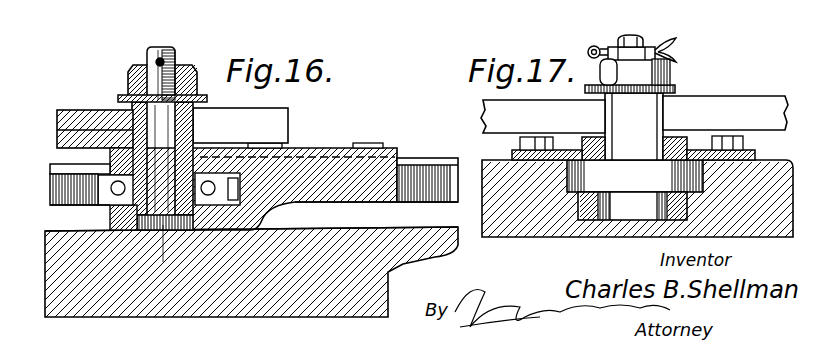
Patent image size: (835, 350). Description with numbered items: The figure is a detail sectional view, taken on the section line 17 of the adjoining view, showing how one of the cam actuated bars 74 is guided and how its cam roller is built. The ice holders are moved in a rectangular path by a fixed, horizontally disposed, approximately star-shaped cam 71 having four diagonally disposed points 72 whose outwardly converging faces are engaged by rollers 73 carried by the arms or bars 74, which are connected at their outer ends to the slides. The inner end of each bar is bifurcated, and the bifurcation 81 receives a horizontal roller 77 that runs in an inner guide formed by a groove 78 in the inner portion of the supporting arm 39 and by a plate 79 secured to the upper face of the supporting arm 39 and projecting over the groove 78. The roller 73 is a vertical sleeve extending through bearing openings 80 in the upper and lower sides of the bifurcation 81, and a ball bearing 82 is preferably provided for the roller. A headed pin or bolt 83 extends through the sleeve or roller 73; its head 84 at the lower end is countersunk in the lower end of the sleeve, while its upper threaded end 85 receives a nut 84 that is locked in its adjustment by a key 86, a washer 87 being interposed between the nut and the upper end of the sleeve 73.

In FIG. 16, the section line 17— 17 is at (143, 32).
In FIG. 17, the section line 17— 17 is at (616, 54).
In FIG. 16, the supporting arm 39 is at (323, 297).
In FIG. 17, the supporting arm 39 is at (511, 238).
In FIG. 16, the star-shaped cam 71 is at (68, 110).
In FIG. 17, the star-shaped cam 71 is at (745, 97).
In FIG. 16, the diagonally disposed point 72 is at (228, 112).
In FIG. 16, the roller 73 is at (57, 132).
In FIG. 17, the roller 73 is at (618, 119).
In FIG. 16, the cam actuated bar 74 is at (337, 142).
In FIG. 17, the cam actuated bar 74 is at (587, 207).
In FIG. 16, the horizontal roller 77 is at (425, 210).
In FIG. 17, the horizontal roller 77 is at (672, 203).
In FIG. 16, the groove 78 is at (427, 196).
In FIG. 17, the groove 78 is at (690, 179).
In FIG. 16, the plate 79 is at (415, 158).
In FIG. 17, the plate 79 is at (512, 155).
In FIG. 16, the bearing opening 80 is at (100, 217).
In FIG. 17, the bearing opening 80 is at (603, 181).
In FIG. 16, the bifurcation 81 is at (225, 180).
In FIG. 17, the bifurcation 81 is at (633, 160).
In FIG. 16, the ball bearing 82 is at (208, 206).
In FIG. 16, the headed pin or bolt 83 is at (167, 125).
In FIG. 16, the head / nut 84 is at (130, 67).
In FIG. 17, the head / nut 84 is at (606, 70).
In FIG. 16, the upper threaded end 85 is at (168, 56).
In FIG. 17, the upper threaded end 85 is at (593, 45).
In FIG. 16, the key 86 is at (165, 60).
In FIG. 16, the washer 87 is at (120, 96).
In FIG. 17, the washer 87 is at (677, 89).